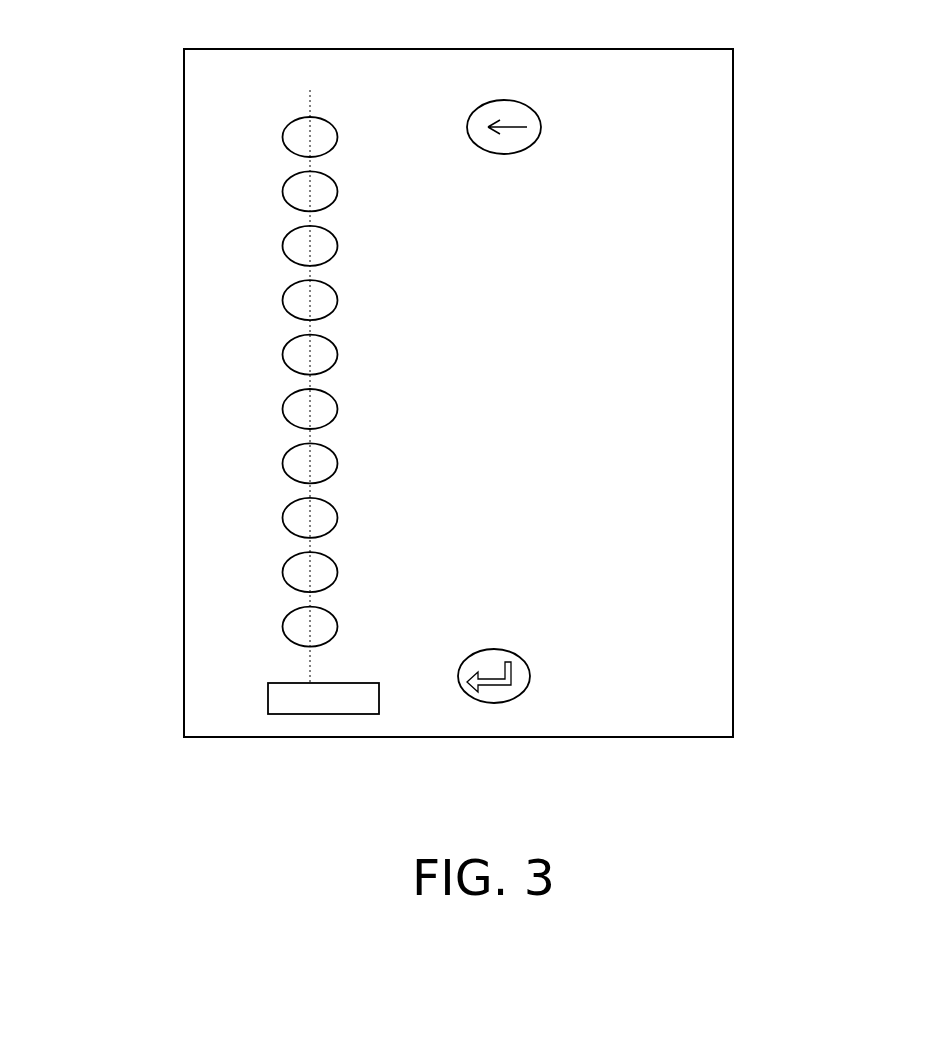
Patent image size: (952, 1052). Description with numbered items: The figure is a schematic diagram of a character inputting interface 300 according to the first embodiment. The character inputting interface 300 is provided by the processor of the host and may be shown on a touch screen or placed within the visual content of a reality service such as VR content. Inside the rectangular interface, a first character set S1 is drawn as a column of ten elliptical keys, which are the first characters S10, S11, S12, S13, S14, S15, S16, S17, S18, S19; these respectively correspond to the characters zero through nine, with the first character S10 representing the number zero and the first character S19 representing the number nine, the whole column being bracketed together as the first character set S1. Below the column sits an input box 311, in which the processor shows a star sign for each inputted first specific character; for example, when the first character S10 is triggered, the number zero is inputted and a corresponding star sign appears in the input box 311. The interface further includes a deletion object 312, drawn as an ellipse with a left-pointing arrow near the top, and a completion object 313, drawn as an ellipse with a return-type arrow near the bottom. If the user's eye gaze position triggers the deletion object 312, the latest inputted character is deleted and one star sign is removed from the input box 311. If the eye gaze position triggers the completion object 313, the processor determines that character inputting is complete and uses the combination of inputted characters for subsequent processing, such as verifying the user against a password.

The character inputting interface 300 is at (943, 765).
The input box 311 is at (268, 698).
The deletion object 312 is at (505, 100).
The completion object 313 is at (531, 676).
The first character set S1 is at (75, 101).
The first character S10 is at (283, 143).
The first character S11 is at (283, 197).
The first character S12 is at (283, 252).
The first character S13 is at (283, 306).
The first character S14 is at (283, 361).
The first character S15 is at (283, 415).
The first character S16 is at (283, 469).
The first character S17 is at (283, 524).
The first character S18 is at (283, 578).
The first character S19 is at (283, 633).